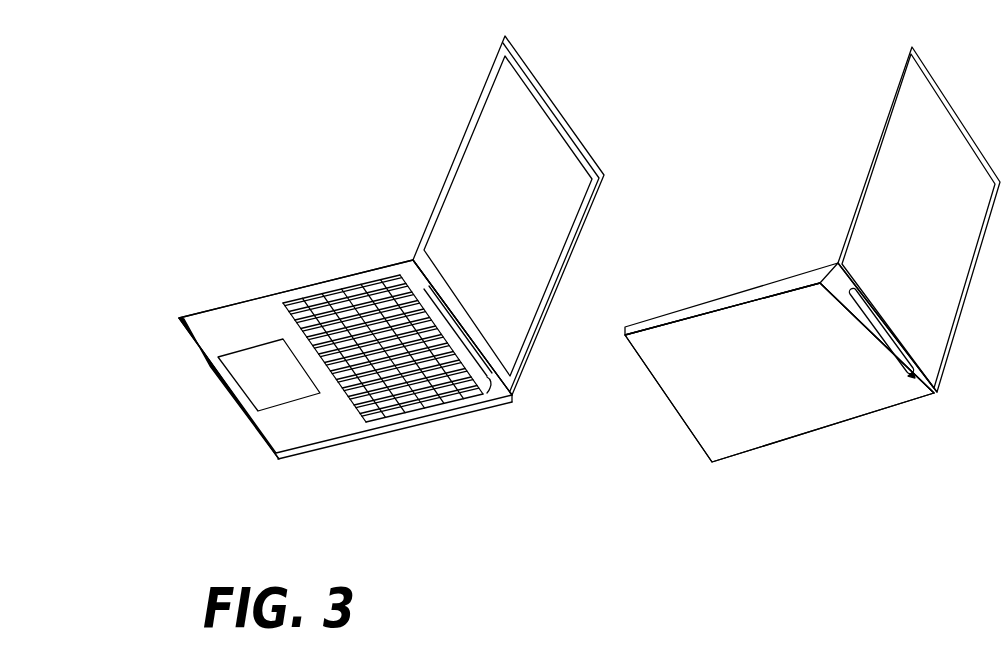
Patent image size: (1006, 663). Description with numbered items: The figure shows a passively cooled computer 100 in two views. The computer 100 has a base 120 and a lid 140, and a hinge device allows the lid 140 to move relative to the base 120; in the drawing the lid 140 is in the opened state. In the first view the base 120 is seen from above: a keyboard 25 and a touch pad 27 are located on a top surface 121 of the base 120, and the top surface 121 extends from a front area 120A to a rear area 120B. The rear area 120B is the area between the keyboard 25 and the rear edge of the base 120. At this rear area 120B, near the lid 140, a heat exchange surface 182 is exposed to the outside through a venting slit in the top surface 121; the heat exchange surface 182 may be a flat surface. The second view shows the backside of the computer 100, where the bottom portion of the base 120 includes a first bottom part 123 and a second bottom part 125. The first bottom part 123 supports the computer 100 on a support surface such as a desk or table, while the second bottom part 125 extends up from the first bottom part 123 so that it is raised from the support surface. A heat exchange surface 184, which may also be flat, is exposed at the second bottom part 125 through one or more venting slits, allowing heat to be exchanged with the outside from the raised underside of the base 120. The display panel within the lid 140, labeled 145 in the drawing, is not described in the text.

The computer 100 is at (268, 114).
The base 120 is at (257, 300).
The front area 120A is at (257, 435).
The rear area 120B is at (412, 260).
The top surface 121 is at (231, 316).
The first bottom part 123 is at (720, 332).
The second bottom part 125 is at (828, 268).
The touch pad 27 is at (215, 372).
The keyboard 25 is at (412, 408).
The heat exchange surface 182 is at (490, 382).
The heat exchange surface 184 is at (912, 377).
The lid 140 is at (583, 230).
The display 145 is at (545, 155).